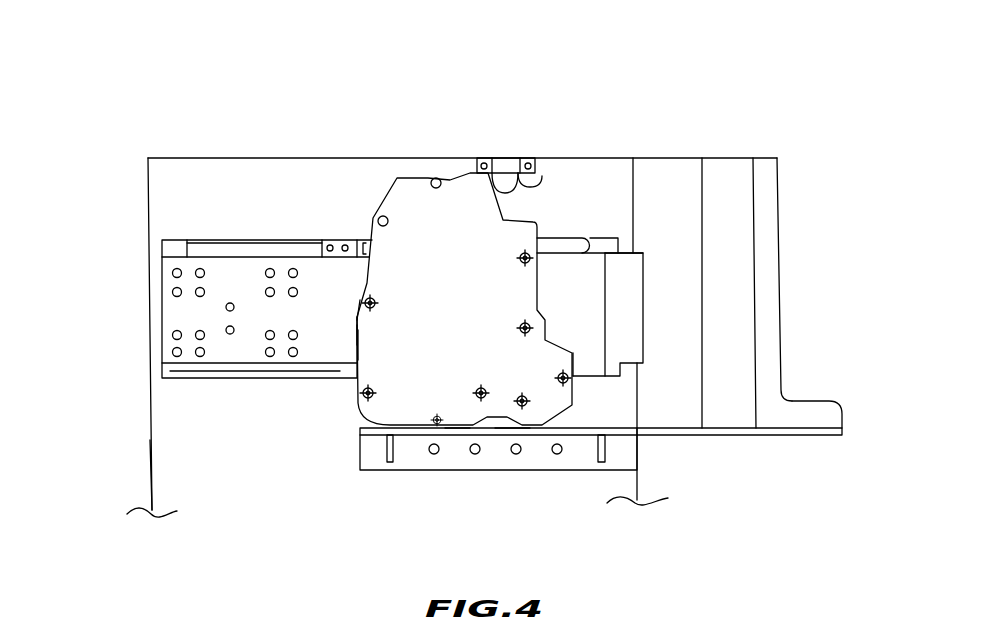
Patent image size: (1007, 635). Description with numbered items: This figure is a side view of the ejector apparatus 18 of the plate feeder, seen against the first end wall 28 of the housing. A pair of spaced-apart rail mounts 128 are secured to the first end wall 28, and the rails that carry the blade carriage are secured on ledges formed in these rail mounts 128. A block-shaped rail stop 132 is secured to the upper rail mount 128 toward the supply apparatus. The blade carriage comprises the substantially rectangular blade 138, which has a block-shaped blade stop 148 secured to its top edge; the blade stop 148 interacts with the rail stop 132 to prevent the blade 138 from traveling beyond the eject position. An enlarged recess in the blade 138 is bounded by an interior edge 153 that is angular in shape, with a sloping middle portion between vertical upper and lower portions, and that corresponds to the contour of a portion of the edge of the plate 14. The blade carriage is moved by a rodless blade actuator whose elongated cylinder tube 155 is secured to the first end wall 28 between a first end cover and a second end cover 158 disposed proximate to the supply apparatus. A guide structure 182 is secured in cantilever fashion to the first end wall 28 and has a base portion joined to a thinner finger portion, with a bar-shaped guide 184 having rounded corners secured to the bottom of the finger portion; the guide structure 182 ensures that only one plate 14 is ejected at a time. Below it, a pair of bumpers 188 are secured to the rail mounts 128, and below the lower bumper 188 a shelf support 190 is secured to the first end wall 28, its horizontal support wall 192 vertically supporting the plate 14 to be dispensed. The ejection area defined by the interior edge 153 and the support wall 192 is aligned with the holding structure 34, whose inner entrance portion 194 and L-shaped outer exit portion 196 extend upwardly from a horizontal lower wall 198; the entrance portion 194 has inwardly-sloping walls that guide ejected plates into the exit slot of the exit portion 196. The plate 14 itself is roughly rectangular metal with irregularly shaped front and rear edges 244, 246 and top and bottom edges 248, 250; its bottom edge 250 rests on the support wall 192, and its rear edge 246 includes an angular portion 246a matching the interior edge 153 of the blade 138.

The plate 14 is at (407, 209).
The ejector apparatus 18 is at (120, 371).
The first end wall 28 is at (165, 453).
The holding structure 34 is at (790, 175).
The rail mounts 128 is at (278, 247).
The rail stop 132 is at (342, 238).
The blade 138 is at (231, 252).
The blade stop 148 is at (175, 248).
The interior edge 153 is at (364, 345).
The cylinder tube 155 is at (603, 252).
The second end cover 158 is at (628, 258).
The guide structure 182 is at (509, 155).
The guide 184 is at (542, 187).
The bumpers 188 is at (582, 241).
The shelf support 190 is at (376, 474).
The support wall 192 is at (508, 430).
The entrance portion 194 is at (737, 257).
The exit portion 196 is at (805, 398).
The lower wall 198 is at (780, 430).
The front edge 244 is at (575, 315).
The rear edge 246 is at (342, 335).
The angular portion 246a is at (353, 317).
The top edge 248 is at (423, 174).
The bottom edge 250 is at (458, 432).